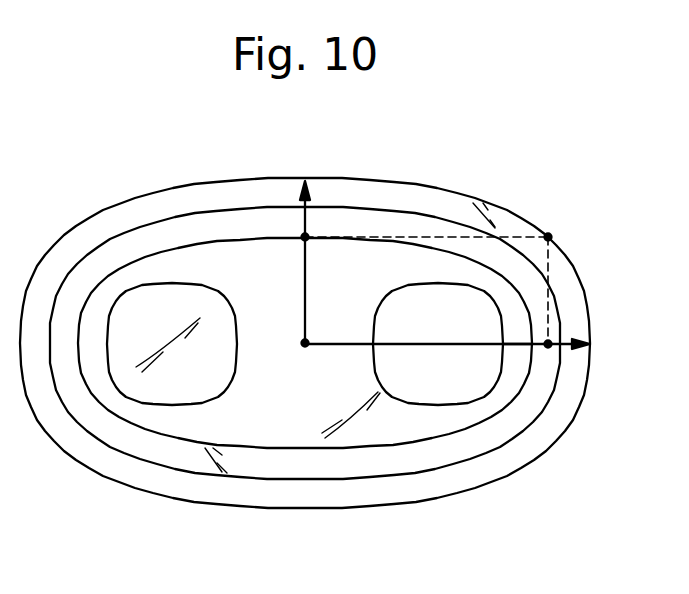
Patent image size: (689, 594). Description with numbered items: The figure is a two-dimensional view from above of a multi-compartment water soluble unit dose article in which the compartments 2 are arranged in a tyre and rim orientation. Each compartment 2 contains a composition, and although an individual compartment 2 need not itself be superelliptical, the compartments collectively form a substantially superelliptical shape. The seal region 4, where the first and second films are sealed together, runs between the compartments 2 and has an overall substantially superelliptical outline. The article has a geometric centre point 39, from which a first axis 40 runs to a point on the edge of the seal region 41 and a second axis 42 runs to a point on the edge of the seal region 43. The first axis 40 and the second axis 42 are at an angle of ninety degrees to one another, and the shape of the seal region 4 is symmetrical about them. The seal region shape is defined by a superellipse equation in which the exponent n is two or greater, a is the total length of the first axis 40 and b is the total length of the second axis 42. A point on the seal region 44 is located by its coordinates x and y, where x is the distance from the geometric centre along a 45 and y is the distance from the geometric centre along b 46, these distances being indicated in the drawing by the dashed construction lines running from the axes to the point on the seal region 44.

The compartment 2 is at (143, 307).
The seal region 4 is at (143, 462).
The geometric centre point 39 is at (305, 343).
The first axis 40 is at (287, 252).
The point on the edge of the seal region 41 is at (304, 181).
The second axis 42 is at (518, 345).
The point on the edge of seal region 43 is at (590, 344).
The point on the seal region 44 is at (548, 237).
The distance along a 45 is at (398, 237).
The distance along b 46 is at (548, 273).